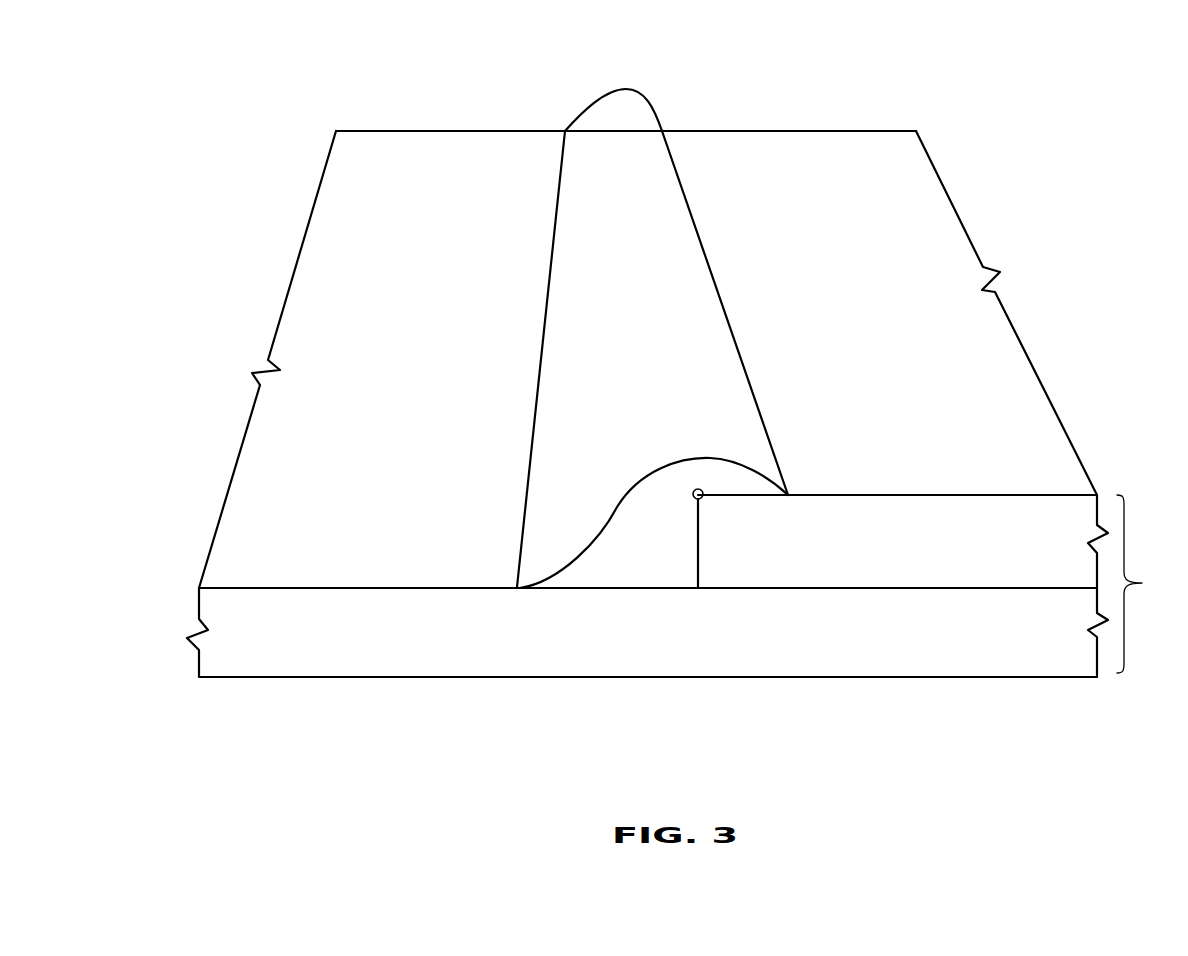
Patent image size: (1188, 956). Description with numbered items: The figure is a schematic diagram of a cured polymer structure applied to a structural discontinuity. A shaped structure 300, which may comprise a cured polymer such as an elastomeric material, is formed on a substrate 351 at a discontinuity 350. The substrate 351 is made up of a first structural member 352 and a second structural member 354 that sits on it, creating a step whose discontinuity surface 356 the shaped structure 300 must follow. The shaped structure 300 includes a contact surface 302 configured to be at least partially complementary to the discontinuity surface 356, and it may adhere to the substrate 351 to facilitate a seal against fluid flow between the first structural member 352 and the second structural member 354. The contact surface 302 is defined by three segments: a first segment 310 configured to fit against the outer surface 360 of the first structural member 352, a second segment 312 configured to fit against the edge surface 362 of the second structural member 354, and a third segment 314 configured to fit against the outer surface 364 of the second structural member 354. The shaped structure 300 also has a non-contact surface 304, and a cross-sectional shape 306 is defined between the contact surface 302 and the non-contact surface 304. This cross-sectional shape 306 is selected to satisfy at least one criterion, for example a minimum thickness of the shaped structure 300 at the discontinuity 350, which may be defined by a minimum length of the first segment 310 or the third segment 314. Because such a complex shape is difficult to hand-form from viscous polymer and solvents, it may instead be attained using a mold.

The shaped structure 300 is at (605, 150).
The contact surface 302 is at (722, 495).
The non-contact surface 304 is at (652, 472).
The cross-sectional shape 306 is at (647, 523).
The first segment 310 is at (568, 587).
The second segment 312 is at (697, 557).
The third segment 314 is at (762, 495).
The discontinuity 350 is at (684, 614).
The substrate 351 is at (1150, 584).
The first structural member 352 is at (343, 640).
The second structural member 354 is at (990, 527).
The discontinuity surface 356 is at (755, 503).
The outer surface 360 is at (323, 513).
The edge surface 362 is at (700, 540).
The outer surface 364 is at (858, 255).